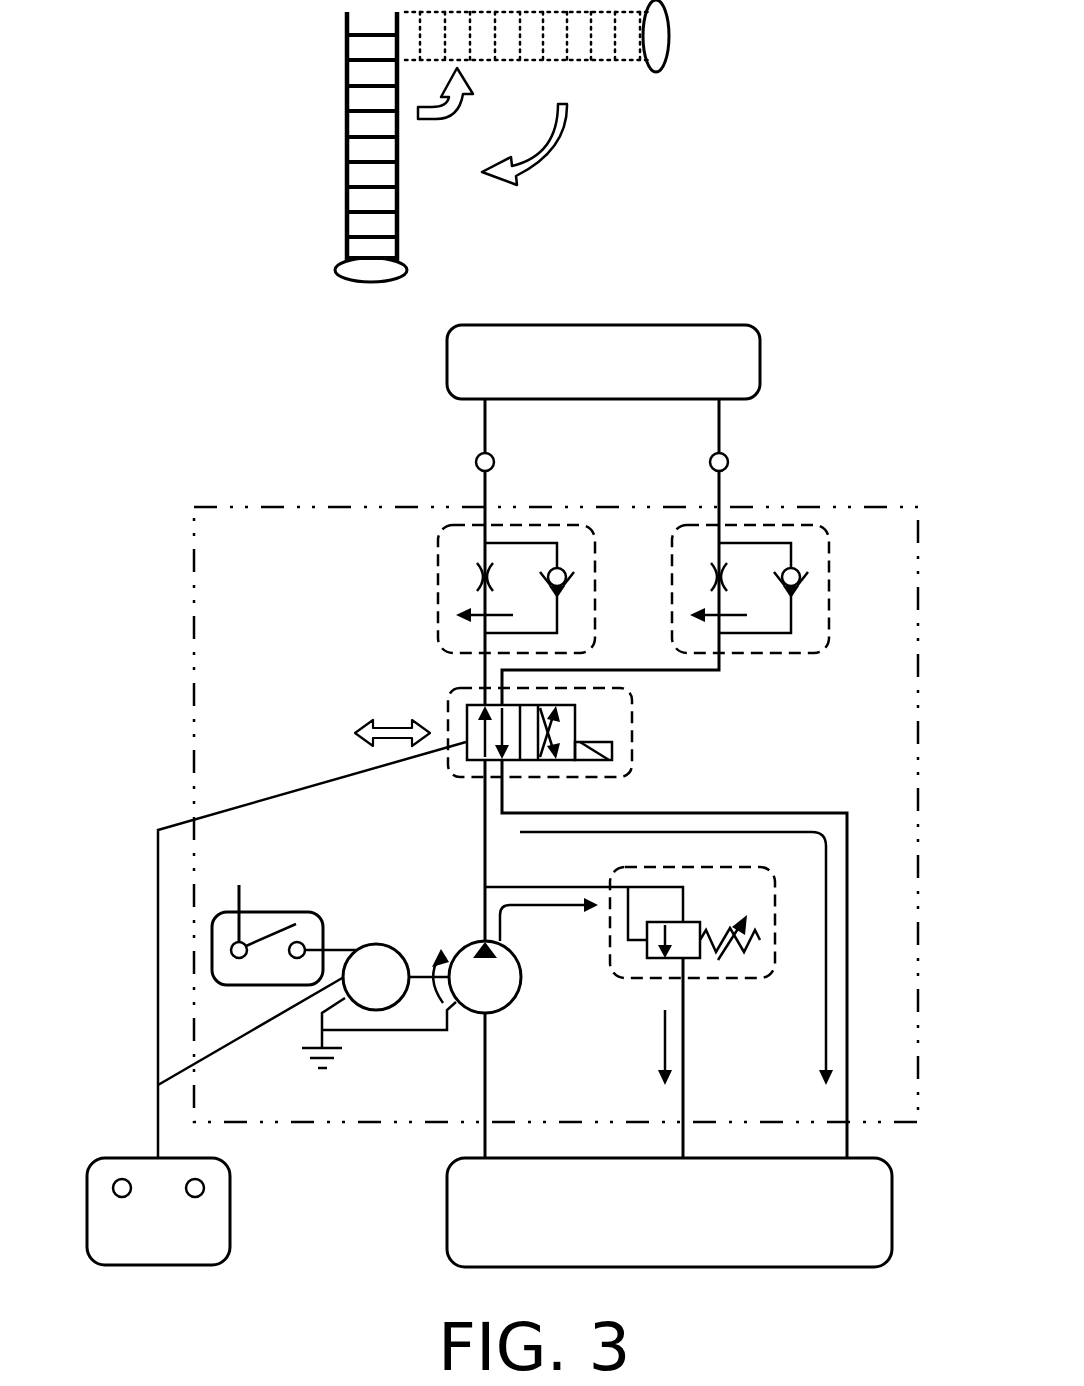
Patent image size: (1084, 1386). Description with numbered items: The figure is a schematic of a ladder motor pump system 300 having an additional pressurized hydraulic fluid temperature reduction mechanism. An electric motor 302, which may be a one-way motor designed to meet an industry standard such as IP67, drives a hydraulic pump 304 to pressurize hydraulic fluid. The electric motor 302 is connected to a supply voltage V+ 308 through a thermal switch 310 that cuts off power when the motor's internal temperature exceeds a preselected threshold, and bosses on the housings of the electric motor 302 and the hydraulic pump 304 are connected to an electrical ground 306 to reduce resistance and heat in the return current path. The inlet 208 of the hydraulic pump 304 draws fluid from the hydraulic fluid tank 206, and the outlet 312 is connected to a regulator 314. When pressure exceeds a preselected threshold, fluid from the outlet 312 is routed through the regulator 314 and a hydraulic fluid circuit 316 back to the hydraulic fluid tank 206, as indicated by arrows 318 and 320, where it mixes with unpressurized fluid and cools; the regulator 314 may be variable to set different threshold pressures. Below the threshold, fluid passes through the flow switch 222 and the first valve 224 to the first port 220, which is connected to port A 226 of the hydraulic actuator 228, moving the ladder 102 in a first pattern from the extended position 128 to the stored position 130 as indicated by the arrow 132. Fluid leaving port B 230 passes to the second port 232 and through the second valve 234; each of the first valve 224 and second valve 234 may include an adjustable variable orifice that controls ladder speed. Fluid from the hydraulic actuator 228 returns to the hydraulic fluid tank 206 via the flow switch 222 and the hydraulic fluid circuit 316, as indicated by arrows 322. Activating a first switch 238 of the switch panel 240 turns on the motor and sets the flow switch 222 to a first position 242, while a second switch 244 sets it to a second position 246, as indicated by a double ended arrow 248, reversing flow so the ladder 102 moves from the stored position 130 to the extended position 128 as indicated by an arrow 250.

The ladder 102 is at (347, 87).
The extended position 128 is at (333, 277).
The stored position 130 is at (675, 24).
The arrow 132 is at (465, 112).
The arrow 250 is at (558, 154).
The ladder motor pump system 300 is at (333, 464).
The hydraulic actuator 228 is at (603, 362).
The port A 226 is at (485, 433).
The port B 230 is at (719, 433).
The first port 220 is at (485, 487).
The second port 232 is at (719, 487).
The first valve 224 is at (490, 589).
The second valve 234 is at (775, 589).
The first position 242 is at (530, 710).
The second position 246 is at (576, 723).
The flow switch 222 is at (634, 758).
The double ended arrow 248 is at (392, 719).
The hydraulic fluid circuit 316 is at (683, 1047).
The regulator 314 is at (630, 922).
The outlet 312 is at (483, 940).
The arrow 318 is at (549, 919).
The arrow 320 is at (650, 1058).
The arrows 322 is at (676, 964).
The hydraulic pump 304 is at (468, 940).
The electric motor 302 is at (374, 942).
The electrical ground 306 is at (379, 1049).
The supply voltage V+ 308 is at (240, 885).
The thermal switch 310 is at (284, 948).
The inlet 208 is at (483, 1048).
The hydraulic fluid tank 206 is at (669, 1212).
The switch panel 240 is at (276, 1003).
The first switch 238 is at (123, 1202).
The second switch 244 is at (196, 1202).